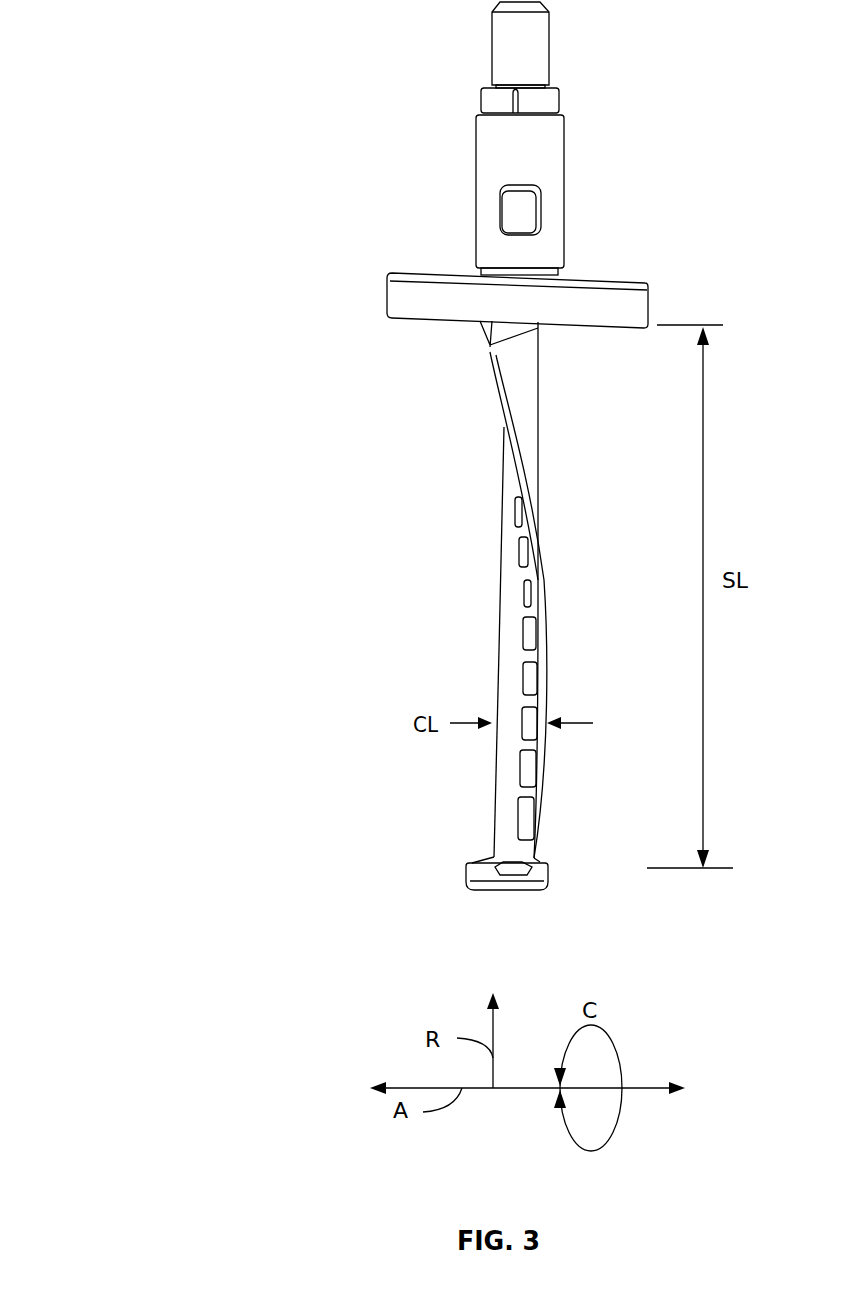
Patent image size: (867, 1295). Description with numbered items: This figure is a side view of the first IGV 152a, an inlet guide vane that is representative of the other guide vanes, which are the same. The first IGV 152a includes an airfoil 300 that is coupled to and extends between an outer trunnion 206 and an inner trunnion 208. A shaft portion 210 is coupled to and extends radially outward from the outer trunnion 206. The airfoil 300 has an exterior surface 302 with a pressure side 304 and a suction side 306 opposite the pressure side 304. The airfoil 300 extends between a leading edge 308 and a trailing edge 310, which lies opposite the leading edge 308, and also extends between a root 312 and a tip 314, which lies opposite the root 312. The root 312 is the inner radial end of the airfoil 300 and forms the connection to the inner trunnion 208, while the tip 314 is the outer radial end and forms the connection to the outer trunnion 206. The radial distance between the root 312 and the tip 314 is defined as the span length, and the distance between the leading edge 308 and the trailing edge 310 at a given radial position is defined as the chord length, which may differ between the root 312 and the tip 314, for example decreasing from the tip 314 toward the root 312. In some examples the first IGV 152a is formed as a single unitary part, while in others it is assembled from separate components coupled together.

The first IGV 152a is at (148, 63).
The shaft portion 210 is at (476, 163).
The outer trunnion 206 is at (387, 297).
The tip 314 is at (467, 325).
The suction side 306 is at (538, 463).
The airfoil 300 is at (510, 490).
The exterior surface 302 is at (510, 523).
The pressure side 304 is at (510, 553).
The leading edge 308 is at (500, 630).
The trailing edge 310 is at (546, 637).
The root 312 is at (502, 853).
The inner trunnion 208 is at (468, 876).